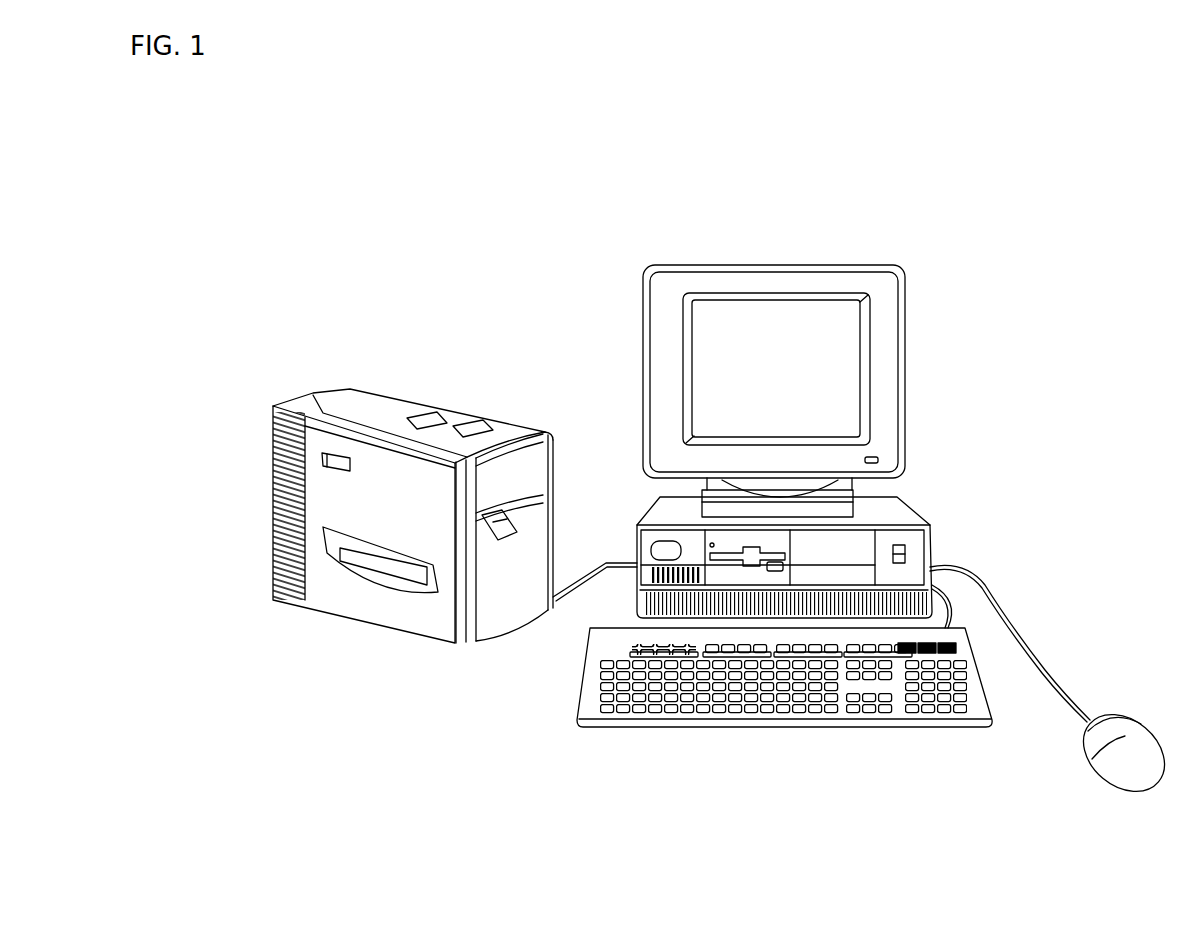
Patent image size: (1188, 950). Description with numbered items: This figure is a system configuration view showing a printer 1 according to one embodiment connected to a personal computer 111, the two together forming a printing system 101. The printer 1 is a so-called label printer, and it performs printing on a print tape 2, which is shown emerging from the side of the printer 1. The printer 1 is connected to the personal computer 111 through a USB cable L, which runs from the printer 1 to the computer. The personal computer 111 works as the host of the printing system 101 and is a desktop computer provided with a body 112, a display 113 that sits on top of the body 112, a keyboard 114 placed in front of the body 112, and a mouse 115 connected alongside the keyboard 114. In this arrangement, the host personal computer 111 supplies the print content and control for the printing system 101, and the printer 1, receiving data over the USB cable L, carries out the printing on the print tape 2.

The printer 1 is at (322, 511).
The print tape 2 is at (513, 538).
The USB cable L is at (595, 560).
The printing system 101 is at (597, 298).
The personal computer 111 is at (970, 427).
The body 112 is at (900, 505).
The display 113 is at (835, 328).
The keyboard 114 is at (582, 700).
The mouse 115 is at (1095, 758).